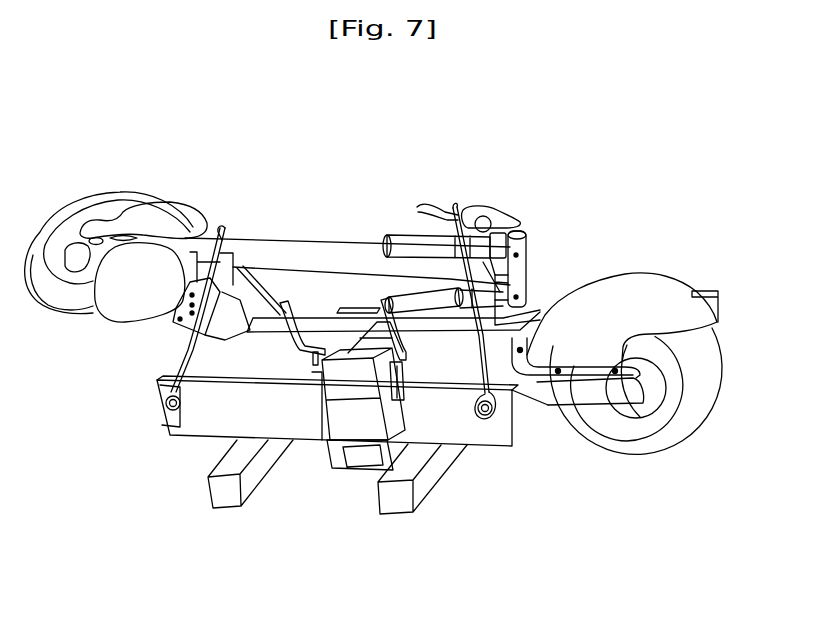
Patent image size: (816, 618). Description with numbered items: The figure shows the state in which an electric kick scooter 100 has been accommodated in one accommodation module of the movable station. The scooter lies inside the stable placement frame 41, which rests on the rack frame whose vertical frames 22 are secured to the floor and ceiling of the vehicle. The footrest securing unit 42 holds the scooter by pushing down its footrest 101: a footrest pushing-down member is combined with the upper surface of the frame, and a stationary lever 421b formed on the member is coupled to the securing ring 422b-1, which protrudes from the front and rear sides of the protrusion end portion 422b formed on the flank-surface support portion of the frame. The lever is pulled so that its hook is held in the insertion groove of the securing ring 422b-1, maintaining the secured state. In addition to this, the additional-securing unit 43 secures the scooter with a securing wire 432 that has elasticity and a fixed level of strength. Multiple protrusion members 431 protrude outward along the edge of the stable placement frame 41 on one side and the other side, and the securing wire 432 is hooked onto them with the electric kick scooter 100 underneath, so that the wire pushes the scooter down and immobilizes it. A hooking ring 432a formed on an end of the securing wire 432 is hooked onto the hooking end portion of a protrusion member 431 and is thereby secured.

The electric kick scooter 100 is at (608, 314).
The footrest 101 is at (502, 342).
The vertical frame 22 is at (262, 488).
The stable placement frame 41 is at (205, 422).
The footrest securing unit 42 is at (357, 334).
The stationary lever 421b is at (283, 300).
The protrusion end portion 422b is at (316, 445).
The securing ring 422b-1 is at (407, 408).
The additional-securing unit 43 is at (520, 483).
The protrusion member 431 is at (478, 416).
The securing wire 432 is at (218, 233).
The hooking ring 432a is at (172, 412).